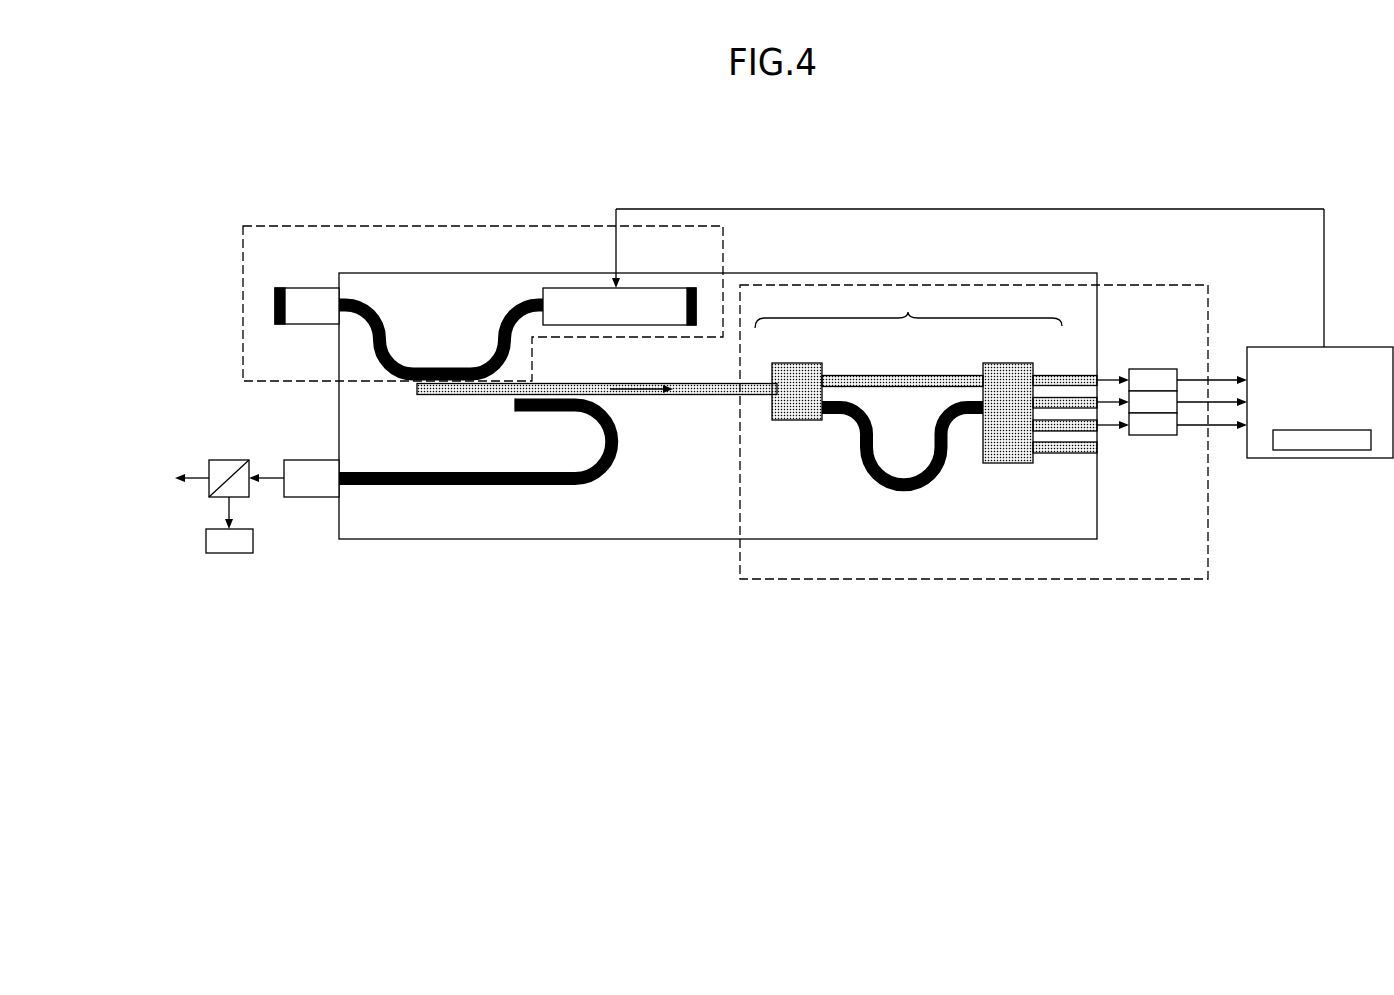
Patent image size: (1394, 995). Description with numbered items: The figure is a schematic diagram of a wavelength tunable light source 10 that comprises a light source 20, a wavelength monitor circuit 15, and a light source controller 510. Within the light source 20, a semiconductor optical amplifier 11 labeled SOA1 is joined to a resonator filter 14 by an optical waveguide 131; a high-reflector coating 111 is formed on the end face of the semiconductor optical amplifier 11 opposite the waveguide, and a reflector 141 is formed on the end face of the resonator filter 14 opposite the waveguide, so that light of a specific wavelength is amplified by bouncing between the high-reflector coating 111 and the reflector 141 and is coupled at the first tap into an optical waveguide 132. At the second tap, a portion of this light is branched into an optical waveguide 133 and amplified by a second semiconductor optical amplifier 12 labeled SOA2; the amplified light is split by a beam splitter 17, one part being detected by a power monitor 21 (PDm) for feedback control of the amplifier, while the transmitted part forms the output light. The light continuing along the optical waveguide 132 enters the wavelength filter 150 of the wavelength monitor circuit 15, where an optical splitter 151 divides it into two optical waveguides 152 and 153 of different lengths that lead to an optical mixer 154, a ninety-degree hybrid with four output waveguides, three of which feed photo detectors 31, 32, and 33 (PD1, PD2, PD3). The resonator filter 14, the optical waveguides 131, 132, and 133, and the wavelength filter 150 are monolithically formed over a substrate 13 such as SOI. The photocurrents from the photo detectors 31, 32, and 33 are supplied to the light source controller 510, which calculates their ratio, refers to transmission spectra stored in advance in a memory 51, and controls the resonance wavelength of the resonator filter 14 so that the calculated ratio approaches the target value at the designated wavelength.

The wavelength tunable light source 10 is at (955, 173).
The light source 20 is at (452, 228).
The semiconductor optical amplifier 11 is at (308, 287).
The high-reflector coating 111 is at (277, 287).
The resonator filter 14 is at (575, 287).
The reflector 141 is at (695, 300).
The substrate 13 is at (597, 542).
The optical waveguide 131 is at (385, 323).
The optical waveguide 132 is at (653, 382).
The optical waveguide 133 is at (613, 470).
The semiconductor optical amplifier 12 is at (309, 460).
The beam splitter 17 is at (240, 460).
The power monitor 21 is at (229, 555).
The wavelength monitor circuit 15 is at (1163, 285).
The wavelength filter 150 is at (908, 308).
The optical splitter 151 is at (796, 363).
The optical waveguide 152 is at (918, 371).
The optical waveguide 153 is at (872, 417).
The optical mixer 154 is at (1009, 363).
The photo detector 31 is at (1153, 369).
The photo detector 32 is at (1177, 411).
The photo detector 33 is at (1155, 437).
The light source controller 510 is at (1327, 344).
The memory 51 is at (1323, 452).